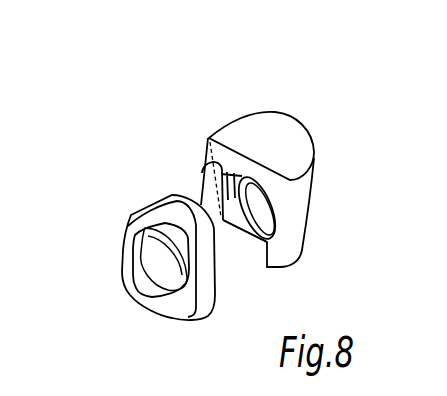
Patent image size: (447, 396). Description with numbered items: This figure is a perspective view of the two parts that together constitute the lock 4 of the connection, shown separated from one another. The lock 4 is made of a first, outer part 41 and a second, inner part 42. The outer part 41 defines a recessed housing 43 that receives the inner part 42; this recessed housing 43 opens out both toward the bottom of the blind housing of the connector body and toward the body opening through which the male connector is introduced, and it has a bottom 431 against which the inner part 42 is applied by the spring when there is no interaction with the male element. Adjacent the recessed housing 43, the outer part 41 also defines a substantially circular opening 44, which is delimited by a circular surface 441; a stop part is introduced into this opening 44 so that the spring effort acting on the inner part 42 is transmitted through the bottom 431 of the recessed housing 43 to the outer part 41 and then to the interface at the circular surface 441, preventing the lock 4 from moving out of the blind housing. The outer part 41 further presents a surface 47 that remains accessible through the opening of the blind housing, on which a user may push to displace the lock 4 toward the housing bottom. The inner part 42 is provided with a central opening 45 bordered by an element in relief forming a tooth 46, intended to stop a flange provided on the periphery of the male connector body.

The lock 4 is at (128, 123).
The outer part 41 is at (295, 249).
The bottom of the recessed housing 431 is at (207, 137).
The surface of the outer part 47 is at (284, 126).
The recessed housing 43 is at (252, 260).
The circular opening 44 is at (273, 222).
The circular surface 441 is at (256, 214).
The inner part 42 is at (203, 308).
The central opening 45 is at (138, 268).
The tooth 46 is at (175, 285).